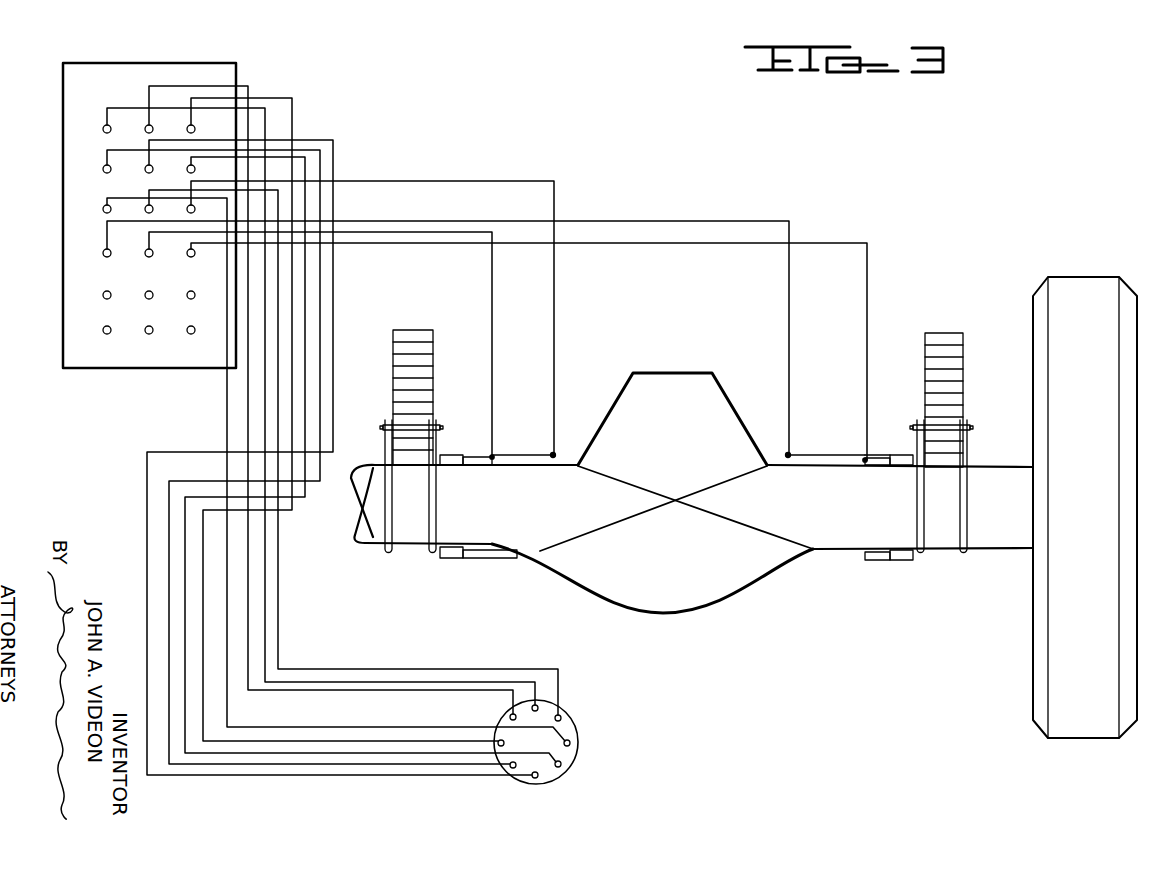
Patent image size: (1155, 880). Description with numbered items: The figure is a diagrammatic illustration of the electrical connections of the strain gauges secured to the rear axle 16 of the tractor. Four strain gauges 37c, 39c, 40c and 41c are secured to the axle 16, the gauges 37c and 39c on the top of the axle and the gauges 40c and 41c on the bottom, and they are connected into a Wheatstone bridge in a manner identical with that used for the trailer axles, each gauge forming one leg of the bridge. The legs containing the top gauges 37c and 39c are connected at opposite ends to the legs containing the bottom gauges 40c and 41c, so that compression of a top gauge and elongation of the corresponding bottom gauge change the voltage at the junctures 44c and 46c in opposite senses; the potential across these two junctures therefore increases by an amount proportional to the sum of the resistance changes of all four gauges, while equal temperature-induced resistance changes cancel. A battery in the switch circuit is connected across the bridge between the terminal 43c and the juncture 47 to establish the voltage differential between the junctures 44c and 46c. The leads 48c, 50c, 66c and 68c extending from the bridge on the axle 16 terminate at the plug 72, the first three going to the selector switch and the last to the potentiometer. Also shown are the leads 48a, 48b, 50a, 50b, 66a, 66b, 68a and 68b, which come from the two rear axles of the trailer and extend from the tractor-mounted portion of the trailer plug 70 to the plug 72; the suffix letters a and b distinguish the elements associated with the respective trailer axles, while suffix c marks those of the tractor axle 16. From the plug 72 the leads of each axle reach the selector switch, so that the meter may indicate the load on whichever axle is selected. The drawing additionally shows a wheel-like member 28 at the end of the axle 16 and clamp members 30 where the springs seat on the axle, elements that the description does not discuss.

The rear axle 16 is at (738, 593).
The wheel 28 is at (1072, 276).
The spring clamp U-bolt 30 is at (438, 442).
The strain gauge 37c is at (447, 453).
The strain gauge 39c is at (902, 448).
The strain gauge 40c is at (452, 558).
The strain gauge 41c is at (913, 560).
The terminal 43c is at (553, 455).
The juncture 44c is at (492, 455).
The juncture 46c is at (865, 459).
The juncture 47 is at (788, 455).
The lead 48a is at (190, 126).
The lead 48b is at (103, 211).
The lead 48c is at (146, 257).
The lead 50a is at (103, 167).
The lead 50b is at (146, 211).
The lead 50c is at (194, 256).
The lead 66a is at (147, 126).
The lead 66b is at (189, 172).
The lead 66c is at (103, 256).
The lead 68a is at (105, 126).
The lead 68b is at (147, 171).
The lead 68c is at (188, 212).
The trailer plug 70 is at (553, 780).
The plug 72 is at (65, 370).